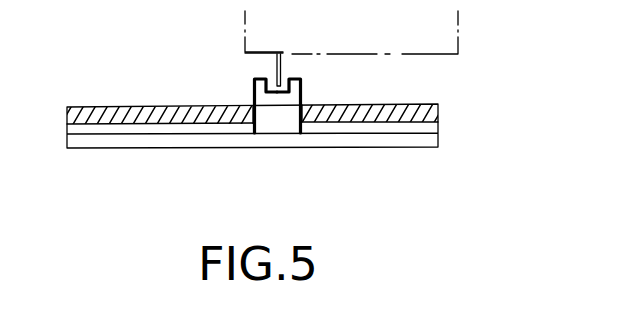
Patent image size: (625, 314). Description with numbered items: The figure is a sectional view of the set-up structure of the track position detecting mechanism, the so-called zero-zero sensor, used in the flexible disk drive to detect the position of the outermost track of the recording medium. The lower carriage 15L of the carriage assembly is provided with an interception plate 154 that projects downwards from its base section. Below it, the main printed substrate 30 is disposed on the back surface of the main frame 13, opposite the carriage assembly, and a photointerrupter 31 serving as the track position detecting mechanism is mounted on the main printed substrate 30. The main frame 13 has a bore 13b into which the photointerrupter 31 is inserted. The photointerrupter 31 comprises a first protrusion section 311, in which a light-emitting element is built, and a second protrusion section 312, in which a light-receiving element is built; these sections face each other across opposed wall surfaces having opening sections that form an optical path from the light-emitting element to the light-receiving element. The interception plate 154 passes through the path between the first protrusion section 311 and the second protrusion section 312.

The main frame 13 is at (108, 106).
The bore 13b is at (304, 106).
The lower carriage 15L is at (460, 52).
The interception plate 154 is at (275, 63).
The main printed substrate 30 is at (167, 143).
The photointerrupter 31 is at (311, 128).
The first protrusion section 311 is at (253, 87).
The second protrusion section 312 is at (302, 83).